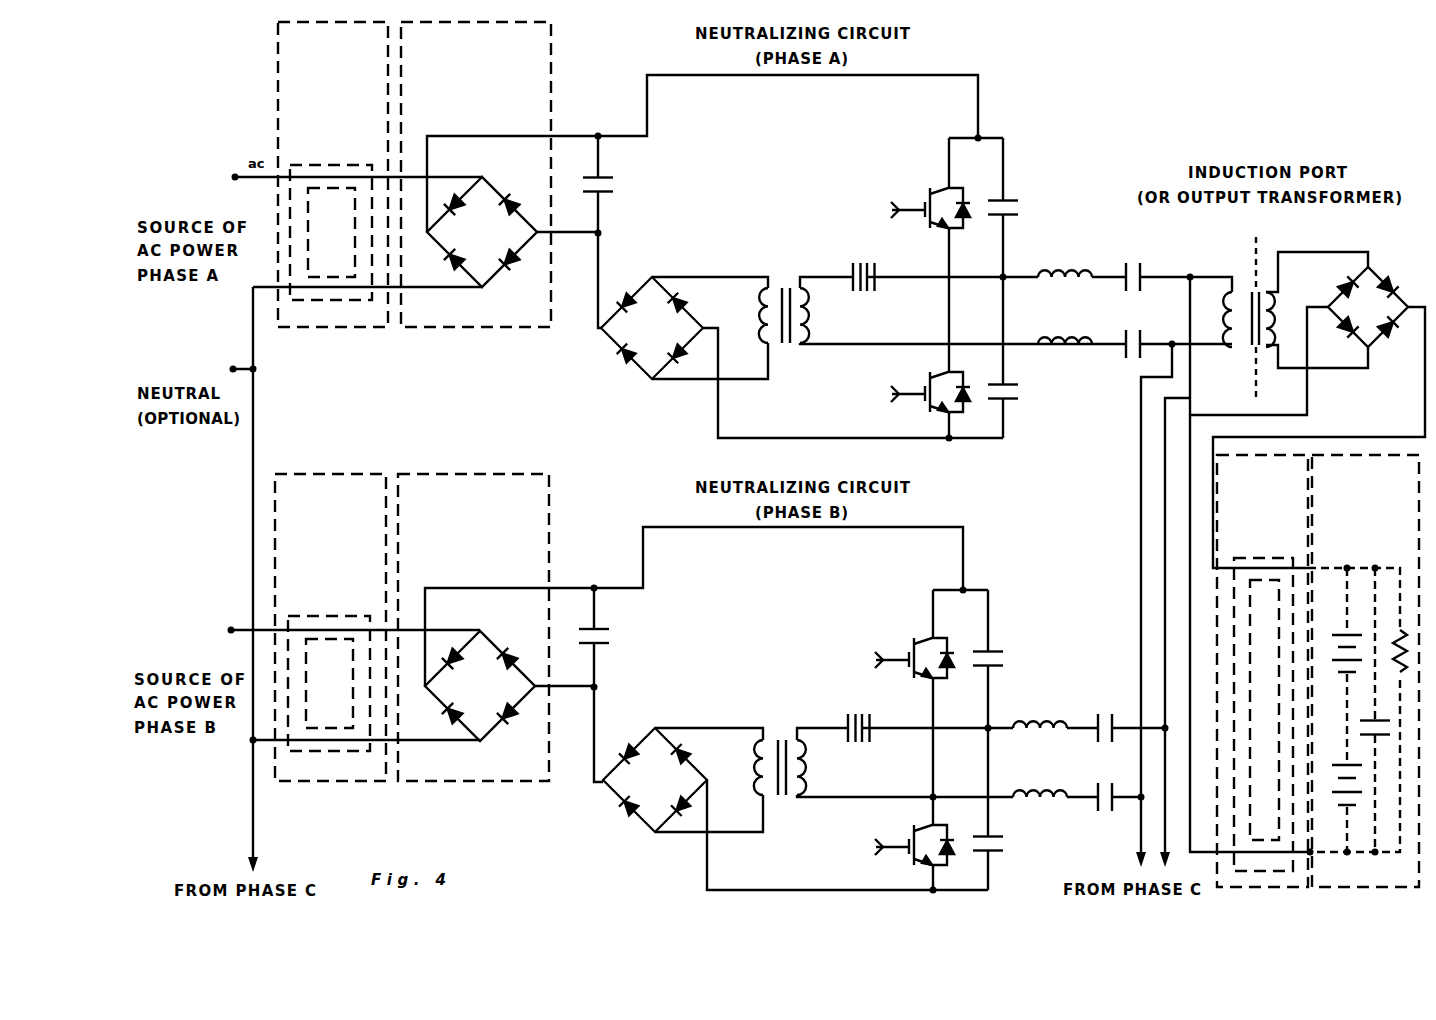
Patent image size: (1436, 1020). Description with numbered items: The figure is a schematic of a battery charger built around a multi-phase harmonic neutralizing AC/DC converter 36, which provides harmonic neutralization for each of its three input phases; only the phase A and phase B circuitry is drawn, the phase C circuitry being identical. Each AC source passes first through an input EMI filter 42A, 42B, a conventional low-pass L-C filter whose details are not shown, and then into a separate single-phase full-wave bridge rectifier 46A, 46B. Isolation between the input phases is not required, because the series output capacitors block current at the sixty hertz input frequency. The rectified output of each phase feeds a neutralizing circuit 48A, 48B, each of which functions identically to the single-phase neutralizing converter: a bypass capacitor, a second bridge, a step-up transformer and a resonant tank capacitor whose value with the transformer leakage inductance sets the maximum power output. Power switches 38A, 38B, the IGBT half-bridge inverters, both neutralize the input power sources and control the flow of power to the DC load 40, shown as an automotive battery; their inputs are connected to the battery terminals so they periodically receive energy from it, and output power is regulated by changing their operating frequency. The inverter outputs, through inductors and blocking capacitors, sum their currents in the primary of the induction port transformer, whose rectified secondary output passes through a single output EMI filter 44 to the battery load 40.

The AC/DC converter 36 is at (1206, 469).
The power switch 38A is at (1010, 445).
The power switch 38B is at (997, 584).
The DC load 40 is at (1366, 452).
The input EMI filter 42A is at (332, 332).
The input EMI filter 42B is at (329, 785).
The output EMI filter 44 is at (1217, 620).
The single-phase full-wave bridge rectifier 46A is at (468, 332).
The single-phase full-wave bridge rectifier 46B is at (466, 785).
The neutralizing circuit 48A is at (810, 258).
The neutralizing circuit 48B is at (796, 710).